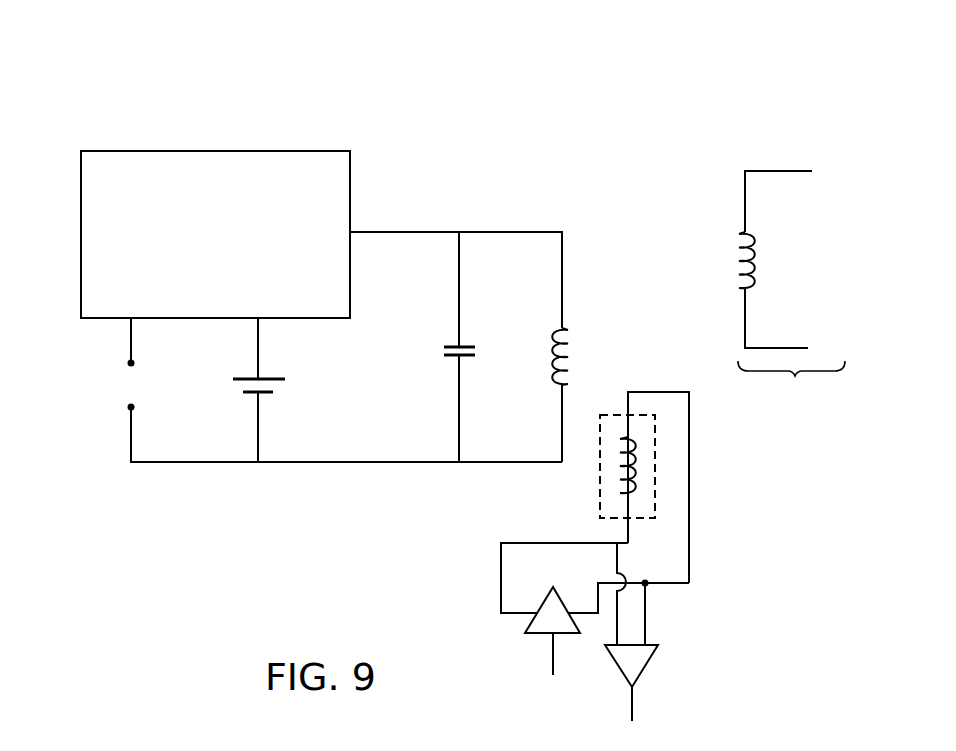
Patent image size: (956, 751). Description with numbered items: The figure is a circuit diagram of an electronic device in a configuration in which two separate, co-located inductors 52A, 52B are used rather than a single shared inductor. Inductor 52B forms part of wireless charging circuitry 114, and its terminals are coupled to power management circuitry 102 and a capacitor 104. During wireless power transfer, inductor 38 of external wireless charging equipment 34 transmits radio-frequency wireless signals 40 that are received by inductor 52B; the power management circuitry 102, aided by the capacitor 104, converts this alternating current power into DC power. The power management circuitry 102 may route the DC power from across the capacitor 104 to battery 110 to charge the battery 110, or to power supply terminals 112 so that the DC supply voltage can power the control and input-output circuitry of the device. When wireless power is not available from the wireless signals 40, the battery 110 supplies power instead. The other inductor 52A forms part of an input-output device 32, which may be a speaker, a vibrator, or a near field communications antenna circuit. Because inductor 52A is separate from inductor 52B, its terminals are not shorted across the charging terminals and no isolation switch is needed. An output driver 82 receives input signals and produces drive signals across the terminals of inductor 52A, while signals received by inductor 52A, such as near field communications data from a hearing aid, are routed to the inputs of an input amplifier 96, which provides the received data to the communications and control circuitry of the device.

The wireless charging circuitry 114 is at (230, 52).
The power management circuitry 102 is at (316, 318).
The battery 110 is at (291, 395).
The power supply terminals 112 is at (128, 407).
The capacitor 104 is at (424, 355).
The inductor 52B is at (549, 345).
The wireless signals 40 is at (614, 331).
The inductor 38 is at (787, 252).
The wireless charging equipment 34 is at (791, 288).
The input-output device 32 is at (599, 486).
The inductor 52A is at (654, 470).
The output driver 82 is at (523, 627).
The input amplifier 96 is at (648, 662).